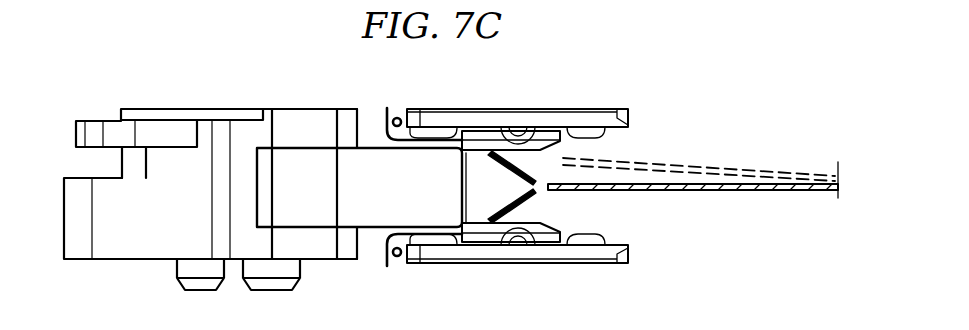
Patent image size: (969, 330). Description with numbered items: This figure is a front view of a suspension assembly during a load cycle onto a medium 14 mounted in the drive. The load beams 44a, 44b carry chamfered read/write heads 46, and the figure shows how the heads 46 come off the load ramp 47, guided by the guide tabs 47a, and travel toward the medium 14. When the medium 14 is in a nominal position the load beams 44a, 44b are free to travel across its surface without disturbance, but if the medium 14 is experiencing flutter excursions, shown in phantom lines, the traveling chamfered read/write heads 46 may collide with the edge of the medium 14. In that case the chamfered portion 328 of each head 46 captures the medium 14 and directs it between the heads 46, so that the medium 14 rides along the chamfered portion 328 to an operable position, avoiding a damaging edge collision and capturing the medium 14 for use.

The medium 14 is at (683, 165).
The chamfered read/write head 46 is at (567, 143).
The load ramp 47 is at (496, 197).
The guide tab 47a is at (359, 147).
The load beam 44a is at (530, 118).
The load beam 44b is at (507, 263).
The chamfered portion 328 is at (562, 146).